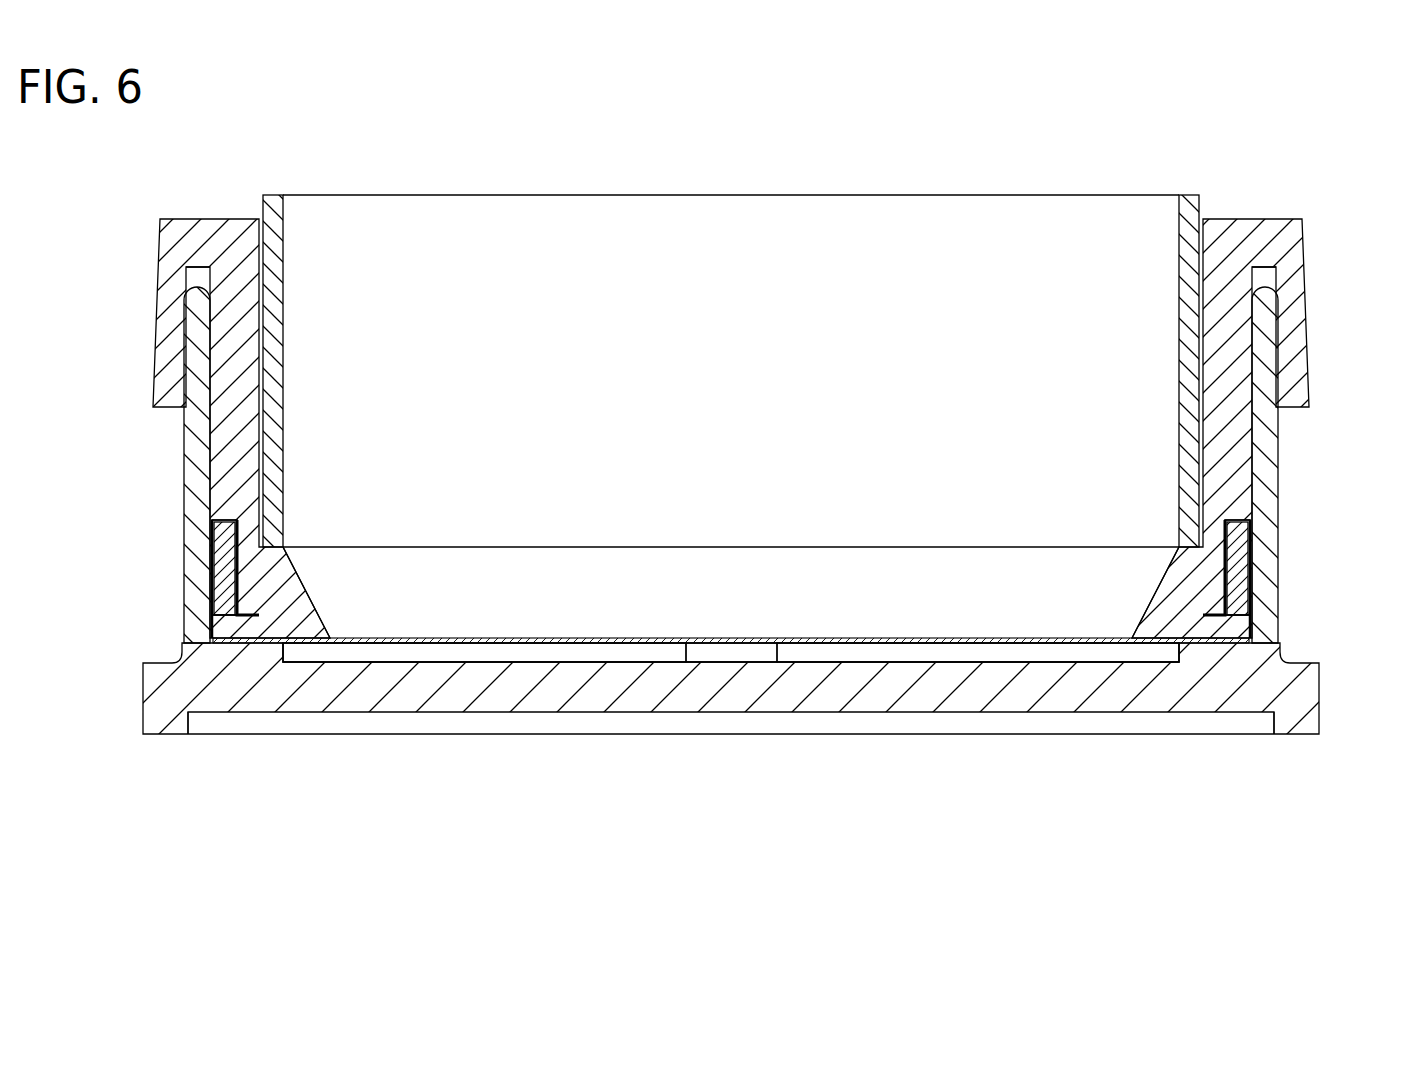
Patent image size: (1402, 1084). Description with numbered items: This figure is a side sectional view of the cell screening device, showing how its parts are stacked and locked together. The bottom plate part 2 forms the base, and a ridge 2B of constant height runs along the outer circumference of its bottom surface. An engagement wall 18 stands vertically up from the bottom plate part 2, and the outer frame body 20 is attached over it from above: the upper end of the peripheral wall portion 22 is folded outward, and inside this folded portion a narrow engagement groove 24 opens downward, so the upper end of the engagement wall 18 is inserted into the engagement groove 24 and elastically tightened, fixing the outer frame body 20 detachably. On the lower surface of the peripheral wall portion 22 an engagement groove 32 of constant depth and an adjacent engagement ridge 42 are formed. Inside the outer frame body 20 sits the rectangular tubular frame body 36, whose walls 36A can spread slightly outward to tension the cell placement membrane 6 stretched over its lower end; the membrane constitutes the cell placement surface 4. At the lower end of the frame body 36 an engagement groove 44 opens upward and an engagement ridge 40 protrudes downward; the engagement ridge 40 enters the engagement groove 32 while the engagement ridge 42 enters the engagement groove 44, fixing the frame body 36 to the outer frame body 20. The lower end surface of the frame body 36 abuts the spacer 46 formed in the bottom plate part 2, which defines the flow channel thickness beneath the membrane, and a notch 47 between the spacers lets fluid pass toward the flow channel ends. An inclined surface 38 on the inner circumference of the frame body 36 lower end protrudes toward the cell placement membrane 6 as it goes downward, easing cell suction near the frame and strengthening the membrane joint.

The bottom plate part 2 is at (612, 712).
The ridge 2B is at (165, 734).
The cell placement surface 4 is at (487, 641).
The cell placement membrane 6 is at (436, 628).
The engagement wall 18 is at (184, 465).
The outer frame body 20 is at (1250, 219).
The peripheral wall portion 22 is at (215, 219).
The engagement groove 24 is at (193, 284).
The engagement groove 32 is at (224, 528).
The frame body 36 is at (714, 195).
The wall 36A is at (269, 195).
The inclined surface 38 is at (315, 597).
The engagement ridge 40 is at (223, 570).
The engagement ridge 42 is at (247, 595).
The engagement groove 44 is at (1215, 612).
The spacer 46 is at (592, 655).
The notch 47 is at (732, 655).